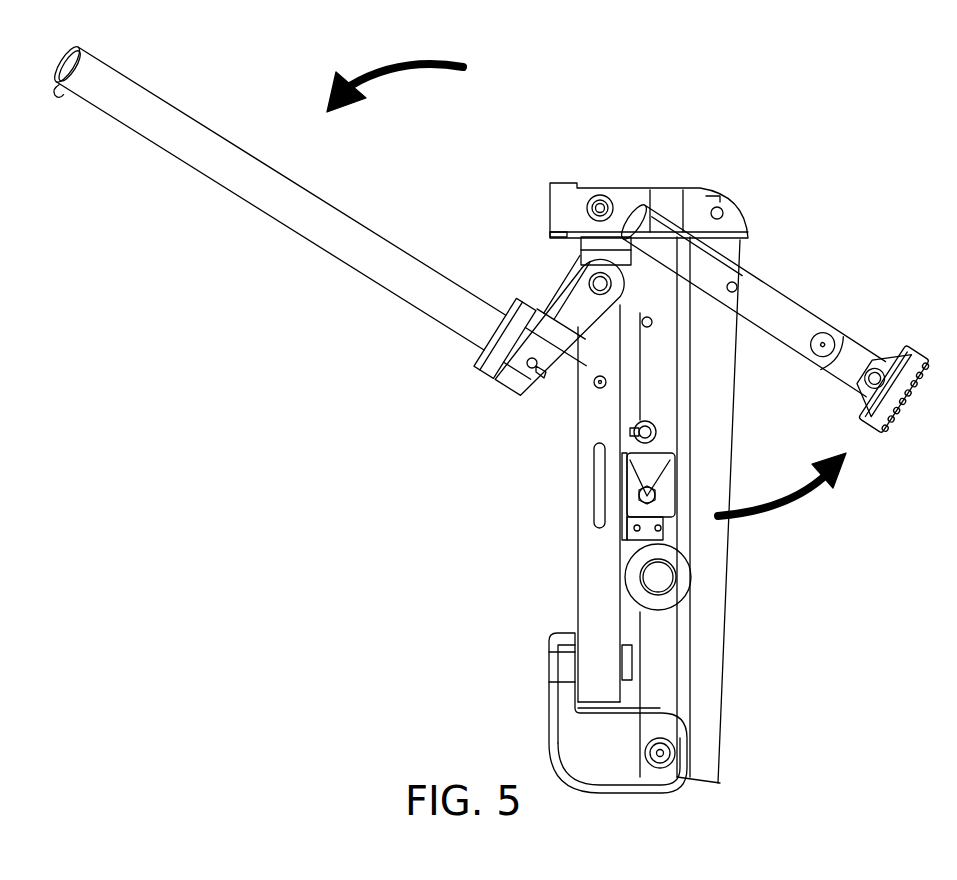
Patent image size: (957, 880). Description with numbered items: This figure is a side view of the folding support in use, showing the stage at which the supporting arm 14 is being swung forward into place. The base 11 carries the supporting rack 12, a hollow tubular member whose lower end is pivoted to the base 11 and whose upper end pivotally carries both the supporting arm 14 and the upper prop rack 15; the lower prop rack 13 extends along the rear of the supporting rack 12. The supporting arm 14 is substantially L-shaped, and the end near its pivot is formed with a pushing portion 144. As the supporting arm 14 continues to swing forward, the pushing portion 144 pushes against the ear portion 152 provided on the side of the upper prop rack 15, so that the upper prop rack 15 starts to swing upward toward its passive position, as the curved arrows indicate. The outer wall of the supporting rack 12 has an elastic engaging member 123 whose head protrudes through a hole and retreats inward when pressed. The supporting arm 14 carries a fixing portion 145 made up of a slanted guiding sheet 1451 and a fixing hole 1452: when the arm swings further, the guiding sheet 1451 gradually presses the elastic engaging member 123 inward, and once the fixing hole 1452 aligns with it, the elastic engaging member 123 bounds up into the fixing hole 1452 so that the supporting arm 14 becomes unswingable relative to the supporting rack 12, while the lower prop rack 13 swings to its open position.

The base 11 is at (516, 726).
The supporting rack 12 is at (602, 587).
The lower prop rack 13 is at (660, 685).
The supporting arm 14 is at (238, 168).
The upper prop rack 15 is at (782, 320).
The elastic engaging member 123 is at (595, 388).
The pushing portion 144 is at (580, 313).
The fixing portion 145 is at (365, 378).
The guiding sheet 1451 is at (533, 377).
The fixing hole 1452 is at (533, 368).
The ear portion 152 is at (565, 325).